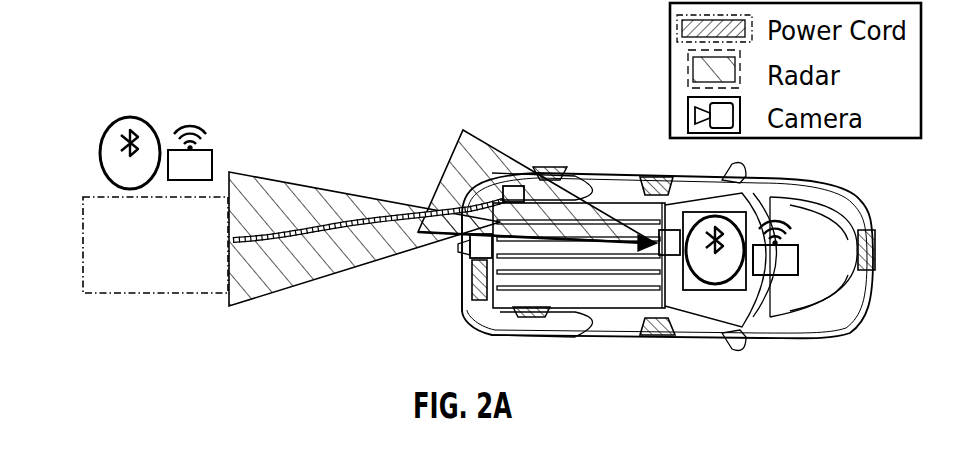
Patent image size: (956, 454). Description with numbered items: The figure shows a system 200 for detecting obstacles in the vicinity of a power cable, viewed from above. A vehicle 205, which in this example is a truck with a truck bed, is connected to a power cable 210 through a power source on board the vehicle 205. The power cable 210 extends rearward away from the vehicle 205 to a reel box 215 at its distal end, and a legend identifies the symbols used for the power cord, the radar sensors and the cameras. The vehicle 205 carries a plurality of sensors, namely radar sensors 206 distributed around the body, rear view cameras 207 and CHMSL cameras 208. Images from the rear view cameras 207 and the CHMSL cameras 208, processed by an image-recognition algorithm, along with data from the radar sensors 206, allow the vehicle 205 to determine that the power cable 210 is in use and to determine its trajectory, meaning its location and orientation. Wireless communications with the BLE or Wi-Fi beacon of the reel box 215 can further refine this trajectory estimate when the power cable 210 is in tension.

The system 200 is at (162, 32).
The vehicle 205 is at (836, 176).
The radar sensors 206 is at (656, 177).
The rear view cameras 207 is at (460, 276).
The CHMSL cameras 208 is at (676, 212).
The power cable 210 is at (430, 212).
The reel box 215 is at (82, 250).